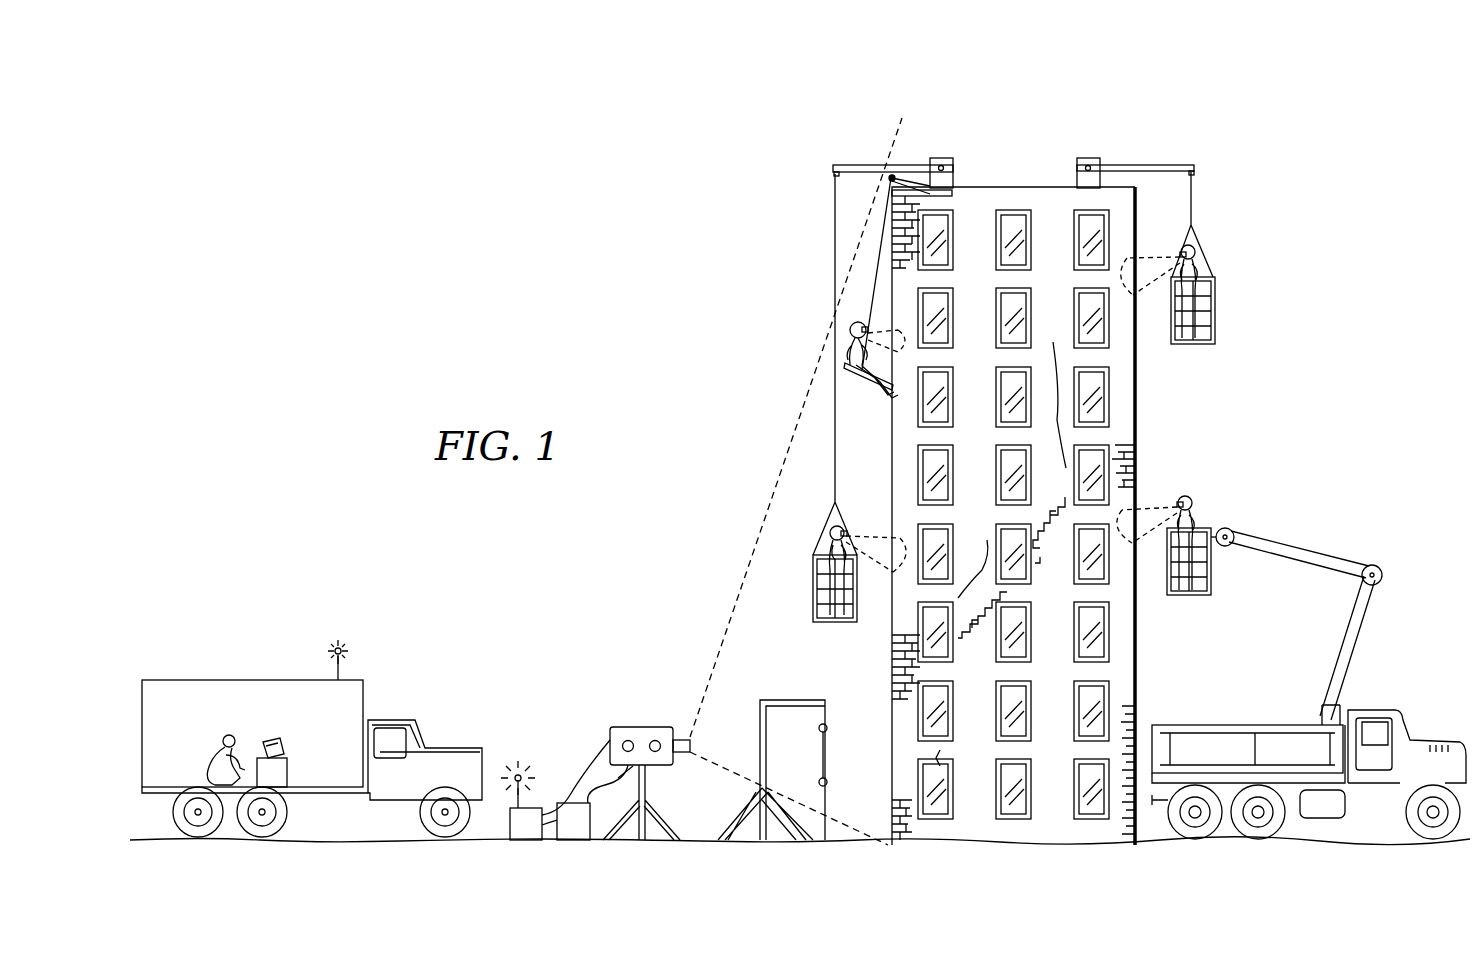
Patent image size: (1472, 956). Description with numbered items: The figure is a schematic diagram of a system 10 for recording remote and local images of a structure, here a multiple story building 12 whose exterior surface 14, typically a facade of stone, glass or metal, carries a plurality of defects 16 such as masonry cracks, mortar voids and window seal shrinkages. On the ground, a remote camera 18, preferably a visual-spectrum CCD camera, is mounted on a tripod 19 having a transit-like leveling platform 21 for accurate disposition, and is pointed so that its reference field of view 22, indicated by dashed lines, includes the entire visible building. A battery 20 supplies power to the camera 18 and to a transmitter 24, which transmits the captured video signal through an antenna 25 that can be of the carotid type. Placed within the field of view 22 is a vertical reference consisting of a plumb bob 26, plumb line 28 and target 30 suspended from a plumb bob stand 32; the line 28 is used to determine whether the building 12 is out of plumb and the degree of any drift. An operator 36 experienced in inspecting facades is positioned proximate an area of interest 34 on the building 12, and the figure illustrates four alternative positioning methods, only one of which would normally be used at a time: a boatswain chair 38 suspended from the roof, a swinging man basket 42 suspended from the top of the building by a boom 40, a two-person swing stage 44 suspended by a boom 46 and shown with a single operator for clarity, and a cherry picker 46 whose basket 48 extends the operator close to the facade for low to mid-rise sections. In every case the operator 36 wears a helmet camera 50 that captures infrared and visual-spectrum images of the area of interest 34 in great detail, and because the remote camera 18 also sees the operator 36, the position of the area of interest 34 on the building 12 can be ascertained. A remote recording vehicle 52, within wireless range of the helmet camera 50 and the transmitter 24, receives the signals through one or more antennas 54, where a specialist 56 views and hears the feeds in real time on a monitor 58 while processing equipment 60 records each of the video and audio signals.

The system 10 is at (1356, 374).
The building 12 is at (1040, 170).
The exterior surface 14 is at (1136, 662).
The defects 16 is at (1057, 395).
The remote camera 18 is at (628, 727).
The tripod 19 is at (656, 840).
The battery 20 is at (570, 840).
The leveling platform 21 is at (665, 765).
The reference field of view 22 is at (725, 625).
The transmitter 24 is at (522, 840).
The antenna 25 is at (512, 762).
The plumb bob 26 is at (832, 784).
The plumb line 28 is at (815, 755).
The target 30 is at (832, 725).
The plumb bob stand 32 is at (795, 846).
The area of interest 34 is at (905, 355).
The operator 36 is at (845, 342).
The boatswain chair 38 is at (862, 385).
The boom 40 is at (862, 165).
The swinging man basket 42 is at (822, 625).
The two-person swing stage 44 is at (1200, 343).
The boom 46 is at (1150, 165).
The basket 48 is at (1204, 595).
The helmet camera 50 is at (848, 326).
The remote recording vehicle 52 is at (222, 680).
The antennas 54 is at (334, 640).
The specialist 56 is at (212, 745).
The monitor 58 is at (278, 742).
The processing equipment 60 is at (290, 765).